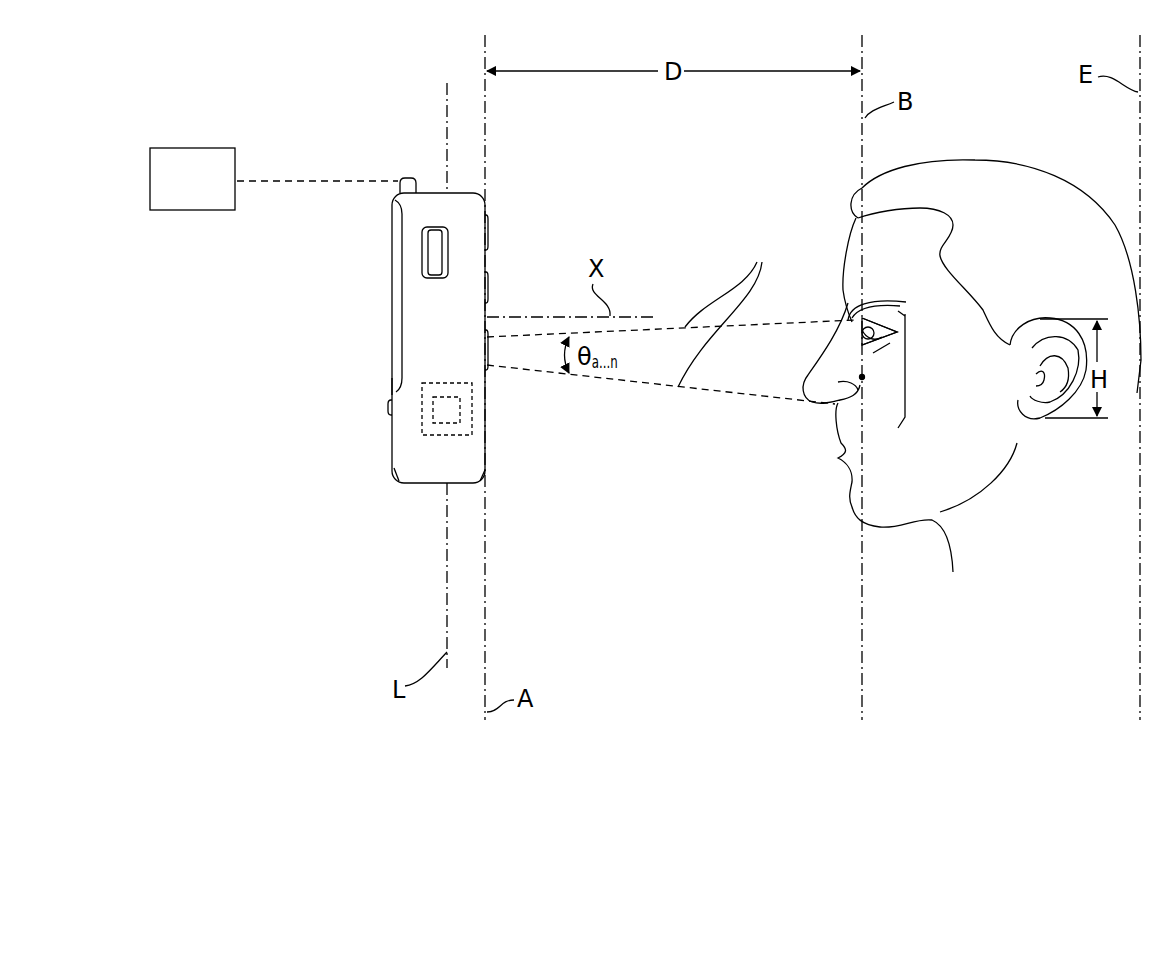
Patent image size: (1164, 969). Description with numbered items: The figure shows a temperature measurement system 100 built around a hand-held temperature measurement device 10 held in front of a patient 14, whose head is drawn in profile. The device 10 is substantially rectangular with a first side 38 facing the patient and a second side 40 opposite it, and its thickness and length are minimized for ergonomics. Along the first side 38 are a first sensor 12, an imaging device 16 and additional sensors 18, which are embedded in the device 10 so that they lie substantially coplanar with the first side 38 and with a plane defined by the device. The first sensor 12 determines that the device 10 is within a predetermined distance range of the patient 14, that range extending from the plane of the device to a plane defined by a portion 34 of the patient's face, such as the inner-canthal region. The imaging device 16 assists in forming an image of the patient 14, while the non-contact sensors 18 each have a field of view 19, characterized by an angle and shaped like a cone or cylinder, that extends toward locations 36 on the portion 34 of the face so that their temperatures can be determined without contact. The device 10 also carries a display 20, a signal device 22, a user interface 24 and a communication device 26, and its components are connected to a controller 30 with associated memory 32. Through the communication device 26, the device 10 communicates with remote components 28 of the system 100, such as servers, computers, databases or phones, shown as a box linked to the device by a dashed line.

The temperature measurement system 100 is at (364, 114).
The temperature measurement device 10 is at (426, 498).
The first sensor 12 is at (489, 229).
The patient 14 is at (938, 561).
The imaging device 16 is at (489, 284).
The additional sensors 18 is at (489, 352).
The fields of view 19 is at (732, 311).
The display 20 is at (392, 380).
The signal device 22 is at (433, 229).
The user interface 24 is at (388, 417).
The communication device 26 is at (408, 177).
The remote components 28 is at (203, 191).
The controller 30 is at (446, 437).
The memory 32 is at (460, 412).
The portion of the face 34 is at (916, 412).
The locations 36 is at (909, 327).
The first side 38 is at (485, 470).
The second side 40 is at (392, 468).